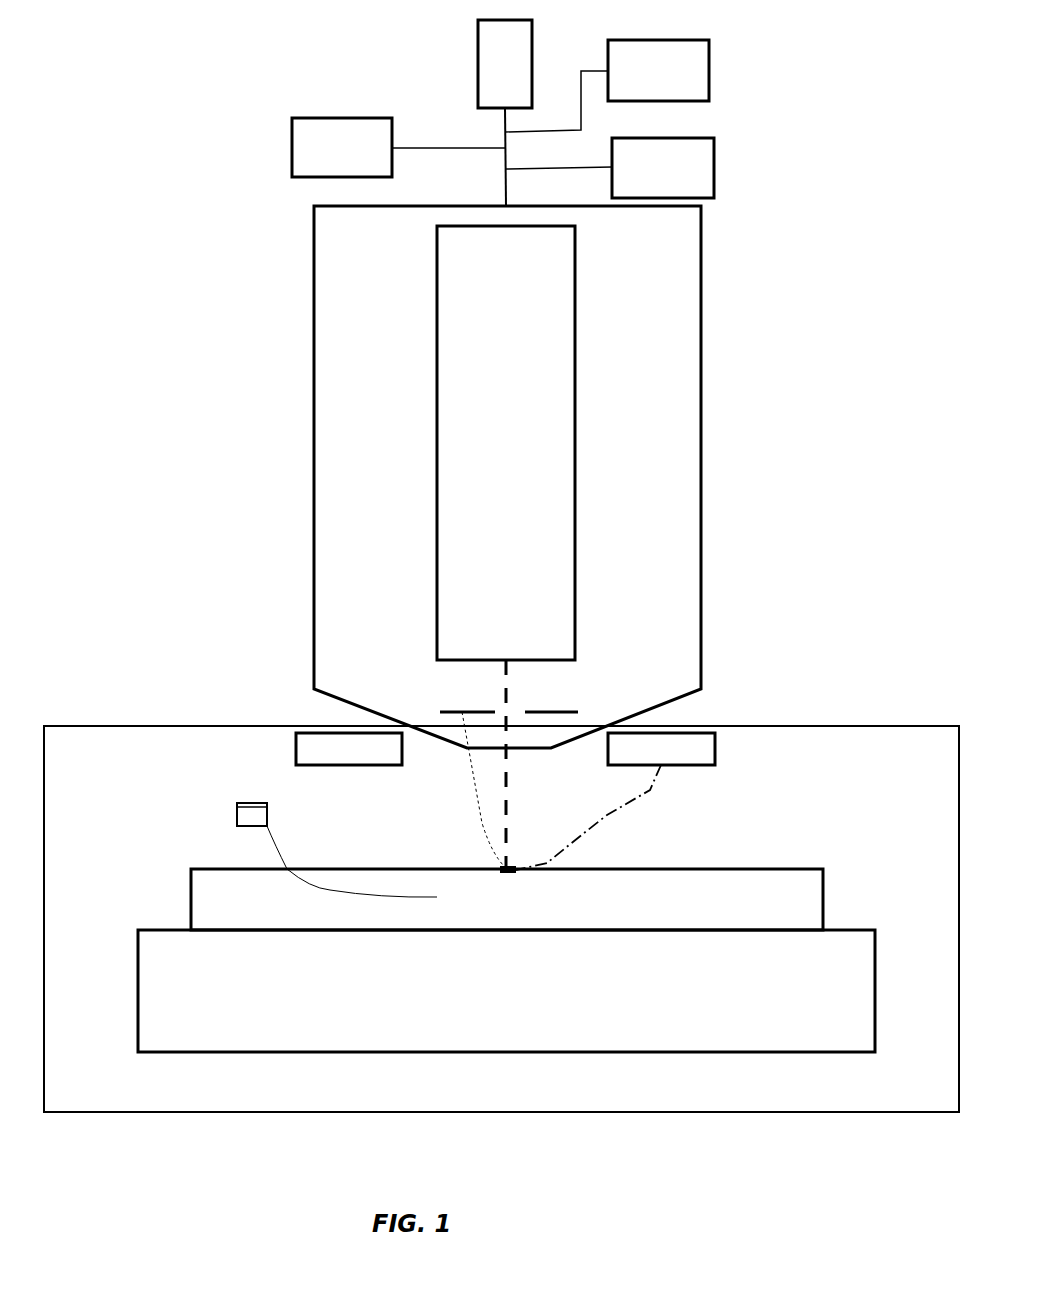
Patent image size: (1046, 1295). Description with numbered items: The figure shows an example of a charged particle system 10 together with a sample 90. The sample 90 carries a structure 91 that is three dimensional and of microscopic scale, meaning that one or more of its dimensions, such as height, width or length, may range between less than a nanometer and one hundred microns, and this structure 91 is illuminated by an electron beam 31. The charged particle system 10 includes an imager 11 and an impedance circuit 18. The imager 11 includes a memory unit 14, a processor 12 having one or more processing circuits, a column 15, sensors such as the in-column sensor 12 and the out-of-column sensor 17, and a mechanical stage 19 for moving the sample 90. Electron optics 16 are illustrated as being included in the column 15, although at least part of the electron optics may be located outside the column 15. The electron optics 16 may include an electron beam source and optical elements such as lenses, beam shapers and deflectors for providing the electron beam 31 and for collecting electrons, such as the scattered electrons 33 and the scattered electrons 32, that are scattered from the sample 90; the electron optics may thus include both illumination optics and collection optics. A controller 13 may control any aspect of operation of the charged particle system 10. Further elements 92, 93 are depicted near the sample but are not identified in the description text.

The charged particle system 10 is at (501, 939).
The imager 11 is at (253, 367).
The processor 12 is at (505, 64).
The controller 13 is at (473, 712).
The memory unit 14 is at (663, 168).
The column 15 is at (507, 477).
The electron optics 16 is at (506, 443).
The out-of-column sensor 17 is at (505, 749).
The impedance circuit 18 is at (342, 147).
The mechanical stage 19 is at (506, 546).
The electron beam 31 is at (508, 787).
The scattered electrons 32 is at (607, 820).
The scattered electrons 33 is at (473, 782).
The sample 90 is at (507, 899).
The structure 91 is at (500, 880).
The sensor surface 92 is at (263, 802).
The light detector 93 is at (243, 813).